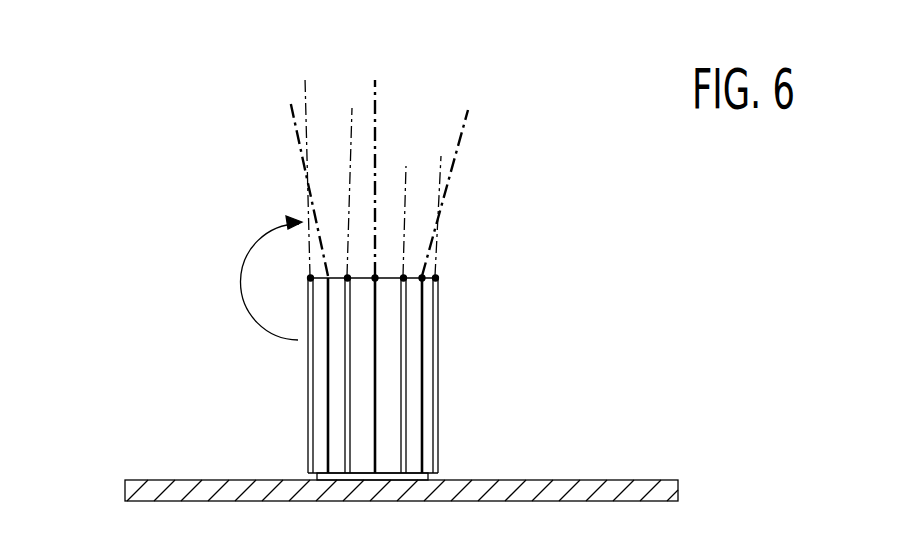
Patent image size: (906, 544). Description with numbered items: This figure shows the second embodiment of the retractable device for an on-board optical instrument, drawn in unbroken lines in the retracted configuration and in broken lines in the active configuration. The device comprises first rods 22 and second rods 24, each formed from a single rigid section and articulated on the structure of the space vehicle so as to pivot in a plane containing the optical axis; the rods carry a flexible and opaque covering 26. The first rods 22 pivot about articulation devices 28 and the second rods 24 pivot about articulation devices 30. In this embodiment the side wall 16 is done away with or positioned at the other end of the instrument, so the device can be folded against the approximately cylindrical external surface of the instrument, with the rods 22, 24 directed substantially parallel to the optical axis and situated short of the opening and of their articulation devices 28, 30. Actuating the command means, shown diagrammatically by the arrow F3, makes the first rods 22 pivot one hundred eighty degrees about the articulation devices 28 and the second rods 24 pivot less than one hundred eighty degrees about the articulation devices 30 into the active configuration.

The side wall 16 is at (178, 492).
The first rods 22 is at (313, 100).
The second rods 24 is at (462, 133).
The flexible and opaque covering 26 is at (362, 430).
The articulation devices for the first rods 28 is at (440, 278).
The articulation devices for the second rods 30 is at (420, 278).
The arrow illustrating the command means F3 is at (266, 238).